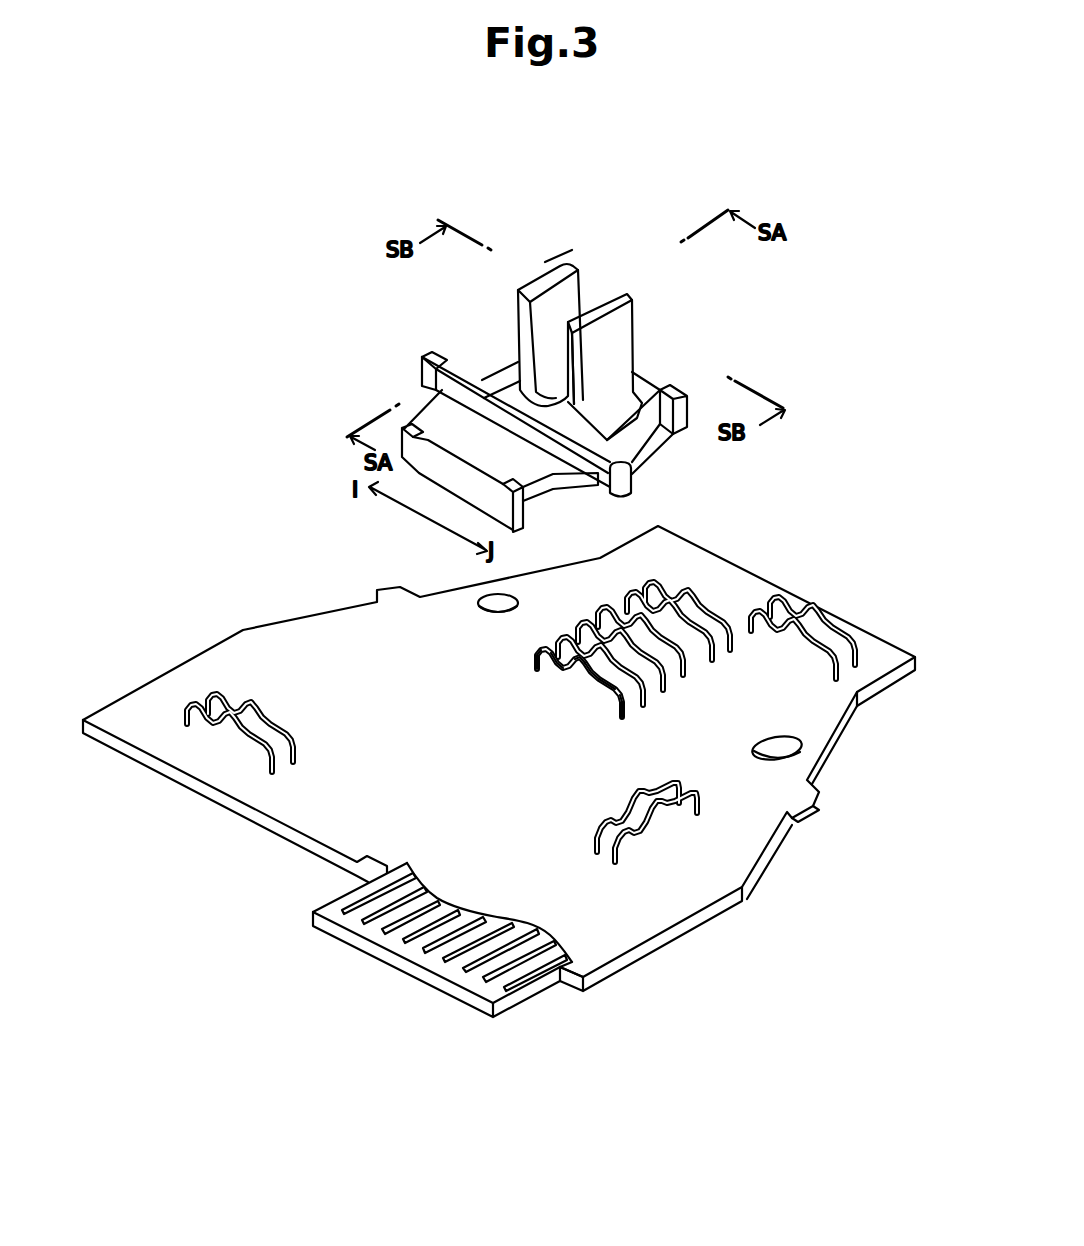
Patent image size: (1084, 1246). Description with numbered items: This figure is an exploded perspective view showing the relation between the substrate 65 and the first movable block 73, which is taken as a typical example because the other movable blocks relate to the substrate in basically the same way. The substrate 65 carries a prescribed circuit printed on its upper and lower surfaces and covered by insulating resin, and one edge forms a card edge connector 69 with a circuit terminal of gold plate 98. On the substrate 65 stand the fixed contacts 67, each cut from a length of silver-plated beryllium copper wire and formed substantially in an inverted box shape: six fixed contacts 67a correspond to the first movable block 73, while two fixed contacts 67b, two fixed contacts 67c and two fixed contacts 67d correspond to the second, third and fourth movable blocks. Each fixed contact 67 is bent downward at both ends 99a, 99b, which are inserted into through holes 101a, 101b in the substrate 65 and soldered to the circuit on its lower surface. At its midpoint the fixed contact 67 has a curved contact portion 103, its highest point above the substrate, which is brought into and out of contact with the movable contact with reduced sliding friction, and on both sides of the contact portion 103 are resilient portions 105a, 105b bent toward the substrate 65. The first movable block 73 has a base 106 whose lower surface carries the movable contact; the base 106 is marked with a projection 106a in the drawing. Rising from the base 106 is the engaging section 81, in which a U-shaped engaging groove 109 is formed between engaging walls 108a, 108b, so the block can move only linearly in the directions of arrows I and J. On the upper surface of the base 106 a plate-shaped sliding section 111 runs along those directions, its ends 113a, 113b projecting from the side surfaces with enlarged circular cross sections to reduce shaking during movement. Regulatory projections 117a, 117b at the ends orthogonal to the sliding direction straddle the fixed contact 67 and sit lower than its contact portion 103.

The substrate 65 is at (330, 612).
The fixed contact 67 is at (540, 688).
The fixed contacts 67a is at (535, 650).
The fixed contacts 67b is at (683, 784).
The fixed contacts 67c is at (850, 640).
The fixed contacts 67d is at (193, 708).
The card edge connector 69 is at (460, 1000).
The first movable block 73 is at (556, 251).
The engaging section 81 is at (567, 301).
The gold plate 98 is at (395, 952).
The end of fixed contact 99a is at (536, 657).
The end of fixed contact 99b is at (619, 712).
The through hole 101a is at (555, 665).
The through hole 101b is at (625, 704).
The contact portion 103 is at (592, 676).
The resilient portion 105a is at (578, 668).
The resilient portion 105b is at (600, 684).
The base 106 is at (562, 419).
The projections 106a is at (407, 421).
The engaging wall 108a is at (520, 310).
The engaging wall 108b is at (618, 332).
The engaging groove 109 is at (583, 320).
The sliding section 111 is at (453, 353).
The end of sliding section 113a is at (421, 357).
The end of sliding section 113b is at (632, 477).
The regulatory projection 117a is at (522, 513).
The regulatory projection 117b is at (690, 412).